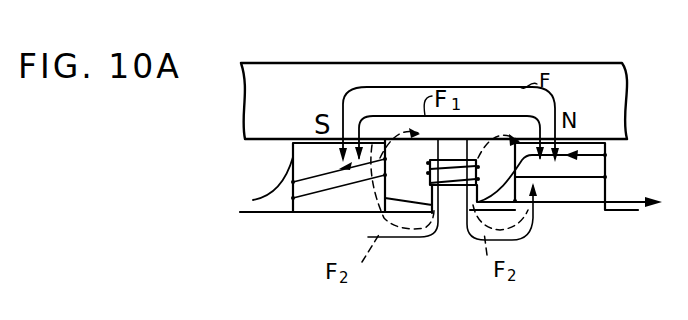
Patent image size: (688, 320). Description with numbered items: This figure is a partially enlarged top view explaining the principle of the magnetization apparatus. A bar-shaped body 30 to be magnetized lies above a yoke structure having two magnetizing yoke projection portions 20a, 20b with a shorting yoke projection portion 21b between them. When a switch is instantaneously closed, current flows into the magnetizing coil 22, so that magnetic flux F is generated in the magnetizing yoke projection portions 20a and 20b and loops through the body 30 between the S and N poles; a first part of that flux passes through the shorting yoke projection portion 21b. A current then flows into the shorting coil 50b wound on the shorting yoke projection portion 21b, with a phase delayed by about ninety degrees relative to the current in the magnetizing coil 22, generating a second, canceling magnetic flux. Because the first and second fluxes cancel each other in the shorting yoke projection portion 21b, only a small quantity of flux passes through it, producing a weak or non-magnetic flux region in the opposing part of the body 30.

The permanent magnet 30 is at (327, 72).
The magnetizing yoke projection portion 20a is at (336, 190).
The magnetizing yoke projection portion 20b is at (580, 192).
The shorting yoke projection portion 21b is at (457, 186).
The shorting coil 50b is at (438, 222).
The magnetizing coil 22 is at (628, 200).